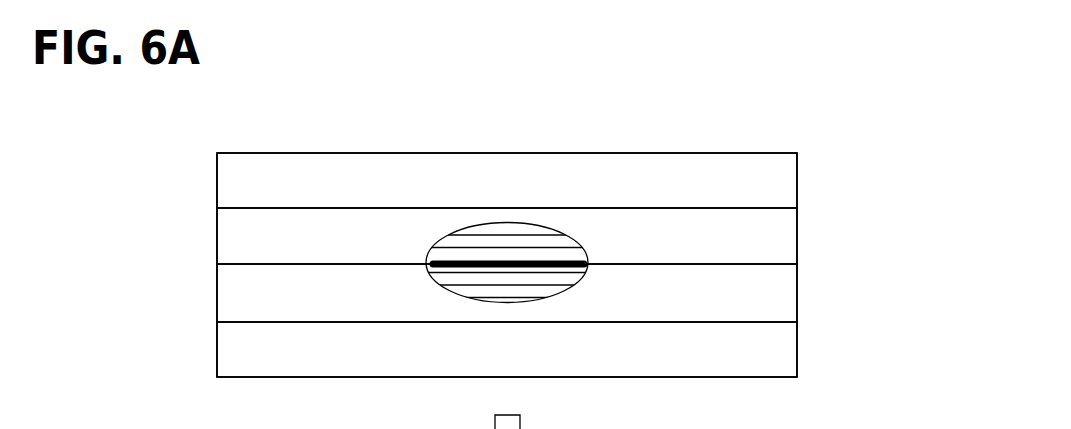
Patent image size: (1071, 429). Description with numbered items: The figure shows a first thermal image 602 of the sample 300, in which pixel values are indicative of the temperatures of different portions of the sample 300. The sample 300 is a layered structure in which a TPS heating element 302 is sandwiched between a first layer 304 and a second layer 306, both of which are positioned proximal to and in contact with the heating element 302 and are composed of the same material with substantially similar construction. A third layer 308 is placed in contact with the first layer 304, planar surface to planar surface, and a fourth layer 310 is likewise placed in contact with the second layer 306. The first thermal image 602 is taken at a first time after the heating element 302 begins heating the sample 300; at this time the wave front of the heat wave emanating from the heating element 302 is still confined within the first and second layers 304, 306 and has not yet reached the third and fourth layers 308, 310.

The sample 300 is at (178, 117).
The TPS heating element 302 is at (470, 259).
The first layer 304 is at (216, 237).
The second layer 306 is at (216, 293).
The third layer 308 is at (216, 174).
The fourth layer 310 is at (216, 345).
The first thermal image 602 is at (849, 92).